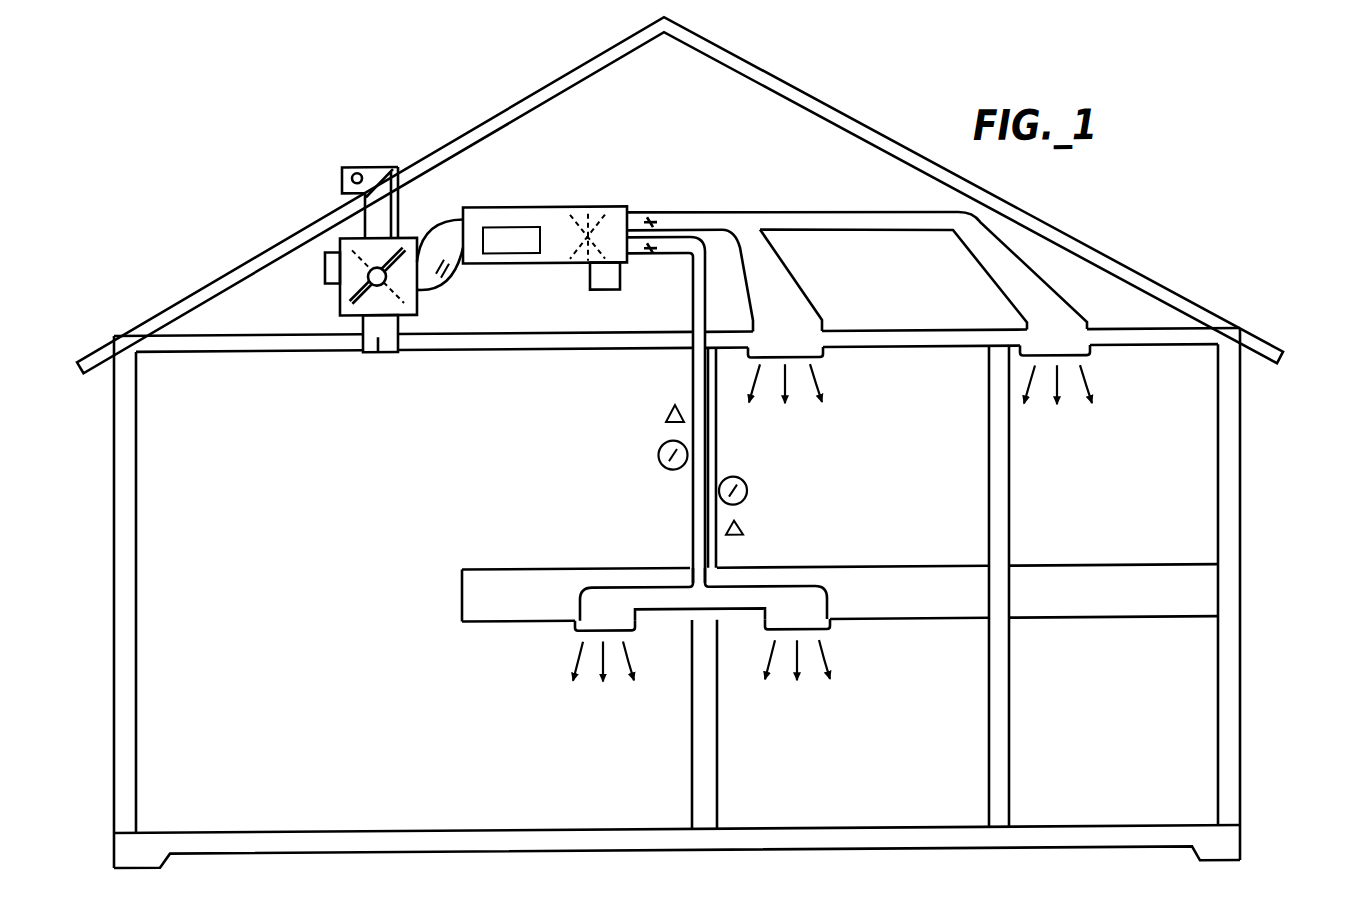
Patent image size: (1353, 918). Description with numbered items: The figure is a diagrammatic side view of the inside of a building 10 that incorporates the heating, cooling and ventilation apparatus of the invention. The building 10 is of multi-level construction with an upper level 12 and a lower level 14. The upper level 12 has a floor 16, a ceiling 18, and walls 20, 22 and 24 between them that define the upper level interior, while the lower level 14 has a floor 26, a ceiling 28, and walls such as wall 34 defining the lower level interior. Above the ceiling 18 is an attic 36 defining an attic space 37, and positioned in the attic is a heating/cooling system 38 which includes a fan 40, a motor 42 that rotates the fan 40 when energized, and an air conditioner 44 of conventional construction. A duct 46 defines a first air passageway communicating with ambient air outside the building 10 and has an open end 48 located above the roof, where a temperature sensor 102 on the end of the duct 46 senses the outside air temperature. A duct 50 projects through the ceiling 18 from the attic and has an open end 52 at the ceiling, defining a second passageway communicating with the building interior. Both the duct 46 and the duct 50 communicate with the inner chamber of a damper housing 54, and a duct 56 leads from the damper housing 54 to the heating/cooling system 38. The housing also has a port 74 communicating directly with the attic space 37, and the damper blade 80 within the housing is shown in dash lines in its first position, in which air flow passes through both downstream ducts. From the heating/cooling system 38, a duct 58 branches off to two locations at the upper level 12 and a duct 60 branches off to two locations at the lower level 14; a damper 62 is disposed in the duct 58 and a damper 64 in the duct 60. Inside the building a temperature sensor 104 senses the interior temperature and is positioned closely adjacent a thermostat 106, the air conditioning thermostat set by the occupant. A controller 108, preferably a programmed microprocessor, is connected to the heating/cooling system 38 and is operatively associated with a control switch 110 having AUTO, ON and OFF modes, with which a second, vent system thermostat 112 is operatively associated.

The building 10 is at (1244, 701).
The upper level 12 is at (1192, 529).
The lower level 14 is at (488, 803).
The floor 16 is at (500, 567).
The ceiling 18 is at (553, 350).
The wall 20 is at (137, 529).
The wall 22 is at (378, 490).
The wall 24 is at (1218, 424).
The floor 26 is at (597, 828).
The ceiling 28 is at (497, 620).
The wall 34 is at (1218, 745).
The attic 36 is at (761, 115).
The attic space 37 is at (831, 164).
The heating/cooling system 38 is at (489, 206).
The fan 40 is at (600, 208).
The motor 42 is at (578, 262).
The air conditioner 44 is at (517, 261).
The duct 46 is at (400, 201).
The open end 48 is at (342, 177).
The duct 50 is at (380, 355).
The open end 52 is at (398, 350).
The damper housing 54 is at (338, 305).
The duct 56 is at (421, 290).
The duct 58 is at (820, 211).
The duct 60 is at (693, 327).
The damper 62 is at (665, 212).
The damper 64 is at (668, 254).
The port 74 is at (325, 259).
The damper blade 80 is at (353, 319).
The temperature sensor 102 is at (358, 168).
The temperature sensor 104 is at (658, 455).
The thermostat 106 is at (666, 416).
The controller 108 is at (602, 290).
The control switch 110 is at (747, 487).
The vent system thermostat 112 is at (743, 528).